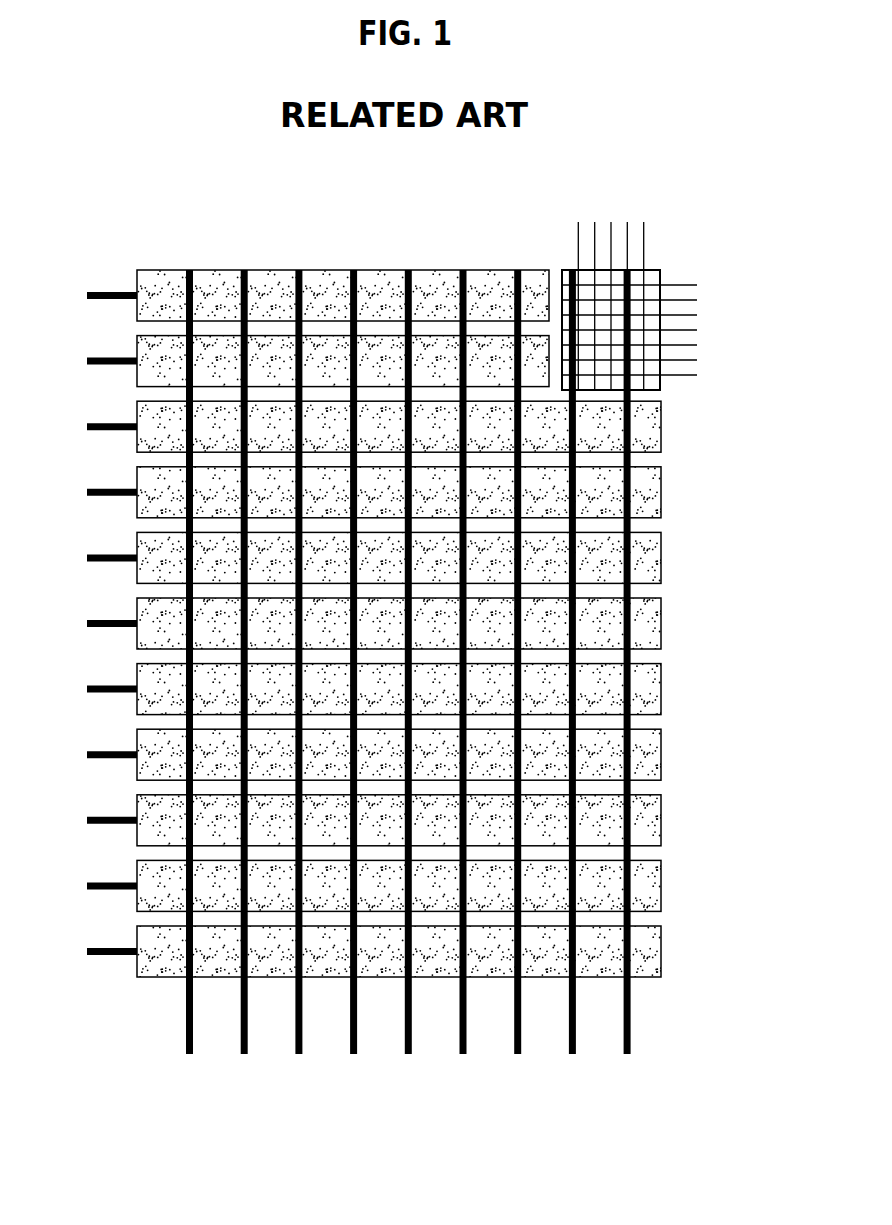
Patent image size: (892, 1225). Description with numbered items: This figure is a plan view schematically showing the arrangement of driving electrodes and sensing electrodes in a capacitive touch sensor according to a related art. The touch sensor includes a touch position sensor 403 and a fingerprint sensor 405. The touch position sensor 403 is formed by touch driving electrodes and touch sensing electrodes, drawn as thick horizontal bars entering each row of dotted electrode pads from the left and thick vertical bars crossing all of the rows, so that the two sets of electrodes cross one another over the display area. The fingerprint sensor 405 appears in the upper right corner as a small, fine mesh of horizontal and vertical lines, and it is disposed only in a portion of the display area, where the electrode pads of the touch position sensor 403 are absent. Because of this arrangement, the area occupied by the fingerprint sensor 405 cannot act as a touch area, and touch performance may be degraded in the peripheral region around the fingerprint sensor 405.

The touch position sensor 403 is at (692, 688).
The fingerprint sensor 405 is at (668, 287).